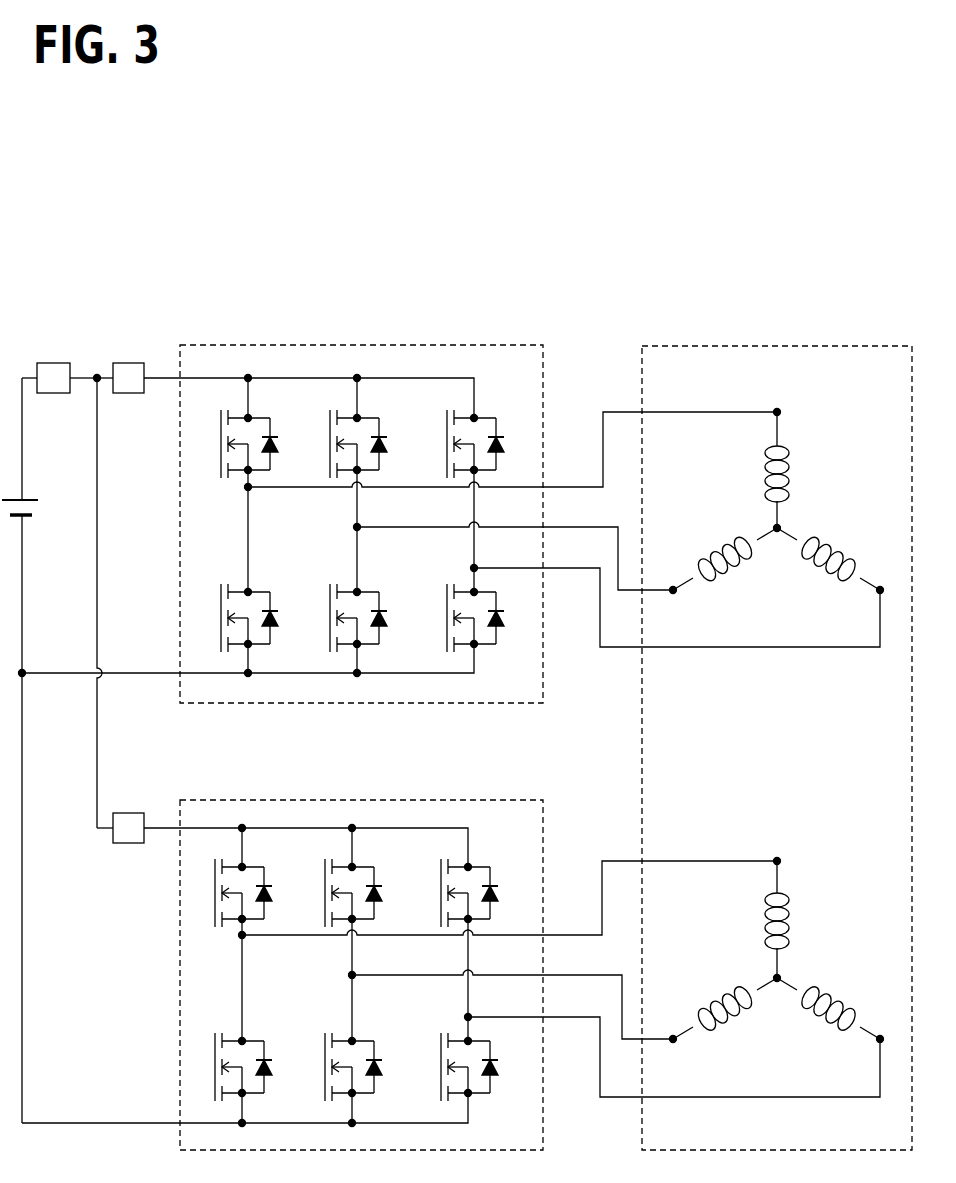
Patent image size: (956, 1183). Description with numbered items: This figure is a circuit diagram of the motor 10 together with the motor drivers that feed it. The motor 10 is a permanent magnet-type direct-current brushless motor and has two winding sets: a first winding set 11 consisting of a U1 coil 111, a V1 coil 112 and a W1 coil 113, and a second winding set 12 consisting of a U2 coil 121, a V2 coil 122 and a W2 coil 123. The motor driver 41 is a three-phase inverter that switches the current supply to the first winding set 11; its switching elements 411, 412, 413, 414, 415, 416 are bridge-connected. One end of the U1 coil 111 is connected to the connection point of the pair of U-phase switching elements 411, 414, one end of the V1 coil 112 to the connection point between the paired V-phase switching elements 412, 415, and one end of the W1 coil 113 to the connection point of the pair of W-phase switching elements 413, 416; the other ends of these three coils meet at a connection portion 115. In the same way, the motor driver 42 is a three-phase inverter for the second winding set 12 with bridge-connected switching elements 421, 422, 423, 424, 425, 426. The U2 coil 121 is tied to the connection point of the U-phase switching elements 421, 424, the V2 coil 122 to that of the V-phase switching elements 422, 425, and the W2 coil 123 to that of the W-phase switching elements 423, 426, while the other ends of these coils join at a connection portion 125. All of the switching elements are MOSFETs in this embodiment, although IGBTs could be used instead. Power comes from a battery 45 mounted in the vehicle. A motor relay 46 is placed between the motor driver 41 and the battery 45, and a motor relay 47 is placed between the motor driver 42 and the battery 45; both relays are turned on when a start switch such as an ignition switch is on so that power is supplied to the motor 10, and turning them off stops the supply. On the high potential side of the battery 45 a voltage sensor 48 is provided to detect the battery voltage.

The motor 10 is at (685, 345).
The first winding set 11 is at (795, 431).
The U1 coil 111 is at (793, 468).
The V1 coil 112 is at (730, 548).
The W1 coil 113 is at (826, 545).
The connection portion 115 is at (777, 536).
The second winding set 12 is at (795, 887).
The U2 coil 121 is at (793, 918).
The V2 coil 122 is at (730, 997).
The W2 coil 123 is at (826, 995).
The connection portion 125 is at (777, 986).
The motor driver 41 is at (210, 345).
The U-phase switching element 411 is at (252, 416).
The V-phase switching element 412 is at (360, 416).
The W-phase switching element 413 is at (478, 416).
The U-phase switching element 414 is at (252, 590).
The V-phase switching element 415 is at (360, 590).
The W-phase switching element 416 is at (498, 638).
The motor driver 42 is at (208, 800).
The U-phase switching element 421 is at (246, 865).
The V-phase switching element 422 is at (356, 865).
The W-phase switching element 423 is at (472, 865).
The U-phase switching element 424 is at (246, 1039).
The V-phase switching element 425 is at (356, 1039).
The W-phase switching element 426 is at (492, 1087).
The battery 45 is at (30, 497).
The motor relay 46 is at (122, 362).
The motor relay 47 is at (125, 813).
The voltage sensor 48 is at (45, 362).